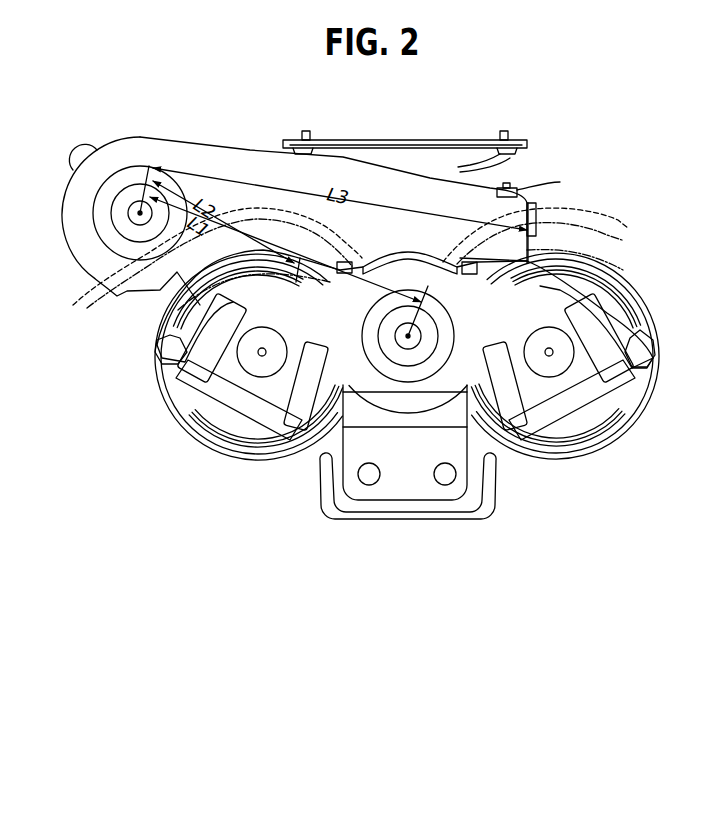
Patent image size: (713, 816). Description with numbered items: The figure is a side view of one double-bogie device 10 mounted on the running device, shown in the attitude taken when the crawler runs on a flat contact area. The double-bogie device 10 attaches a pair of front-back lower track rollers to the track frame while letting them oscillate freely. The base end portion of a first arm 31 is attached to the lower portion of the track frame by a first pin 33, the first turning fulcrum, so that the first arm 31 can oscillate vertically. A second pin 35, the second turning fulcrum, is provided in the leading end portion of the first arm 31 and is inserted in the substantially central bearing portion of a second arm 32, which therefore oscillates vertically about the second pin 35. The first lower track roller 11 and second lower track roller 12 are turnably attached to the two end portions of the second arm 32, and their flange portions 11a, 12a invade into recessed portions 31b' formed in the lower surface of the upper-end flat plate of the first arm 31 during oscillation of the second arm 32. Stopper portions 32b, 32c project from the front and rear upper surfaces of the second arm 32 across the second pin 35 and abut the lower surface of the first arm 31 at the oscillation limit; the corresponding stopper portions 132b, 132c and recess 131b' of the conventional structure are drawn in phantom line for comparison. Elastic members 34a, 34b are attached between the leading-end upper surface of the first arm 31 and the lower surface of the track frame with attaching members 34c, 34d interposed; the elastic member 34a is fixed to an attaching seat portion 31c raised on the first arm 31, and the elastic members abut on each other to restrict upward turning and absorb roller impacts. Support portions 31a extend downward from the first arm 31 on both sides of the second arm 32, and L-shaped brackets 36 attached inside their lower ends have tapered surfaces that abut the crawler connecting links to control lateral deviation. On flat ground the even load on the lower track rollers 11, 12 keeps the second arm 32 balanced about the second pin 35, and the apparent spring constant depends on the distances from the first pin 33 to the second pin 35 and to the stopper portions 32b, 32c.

The double-bogie device 10 is at (548, 127).
The first lower track roller 11 is at (200, 438).
The flange portion of the first lower track roller 11a is at (193, 418).
The second lower track roller 12 is at (615, 440).
The flange portion of the second lower track roller 12a is at (617, 417).
The first arm 31 is at (399, 188).
The support portion 31a is at (402, 472).
The recessed portion 31b' is at (347, 263).
The attaching seat portion 31c is at (537, 210).
The second arm 32 is at (330, 380).
The stopper portion 32b is at (172, 338).
The stopper portion 32c is at (607, 282).
The first pin 33 is at (138, 213).
The elastic member 34a is at (518, 193).
The elastic member 34b is at (505, 158).
The attaching member 34c is at (580, 187).
The attaching member 34d is at (527, 144).
The second pin 35 is at (410, 338).
The bracket 36 is at (332, 472).
The wheel tread reference position 131b' is at (340, 280).
The stopper portion 132b is at (177, 310).
The stopper portion 132c is at (623, 270).